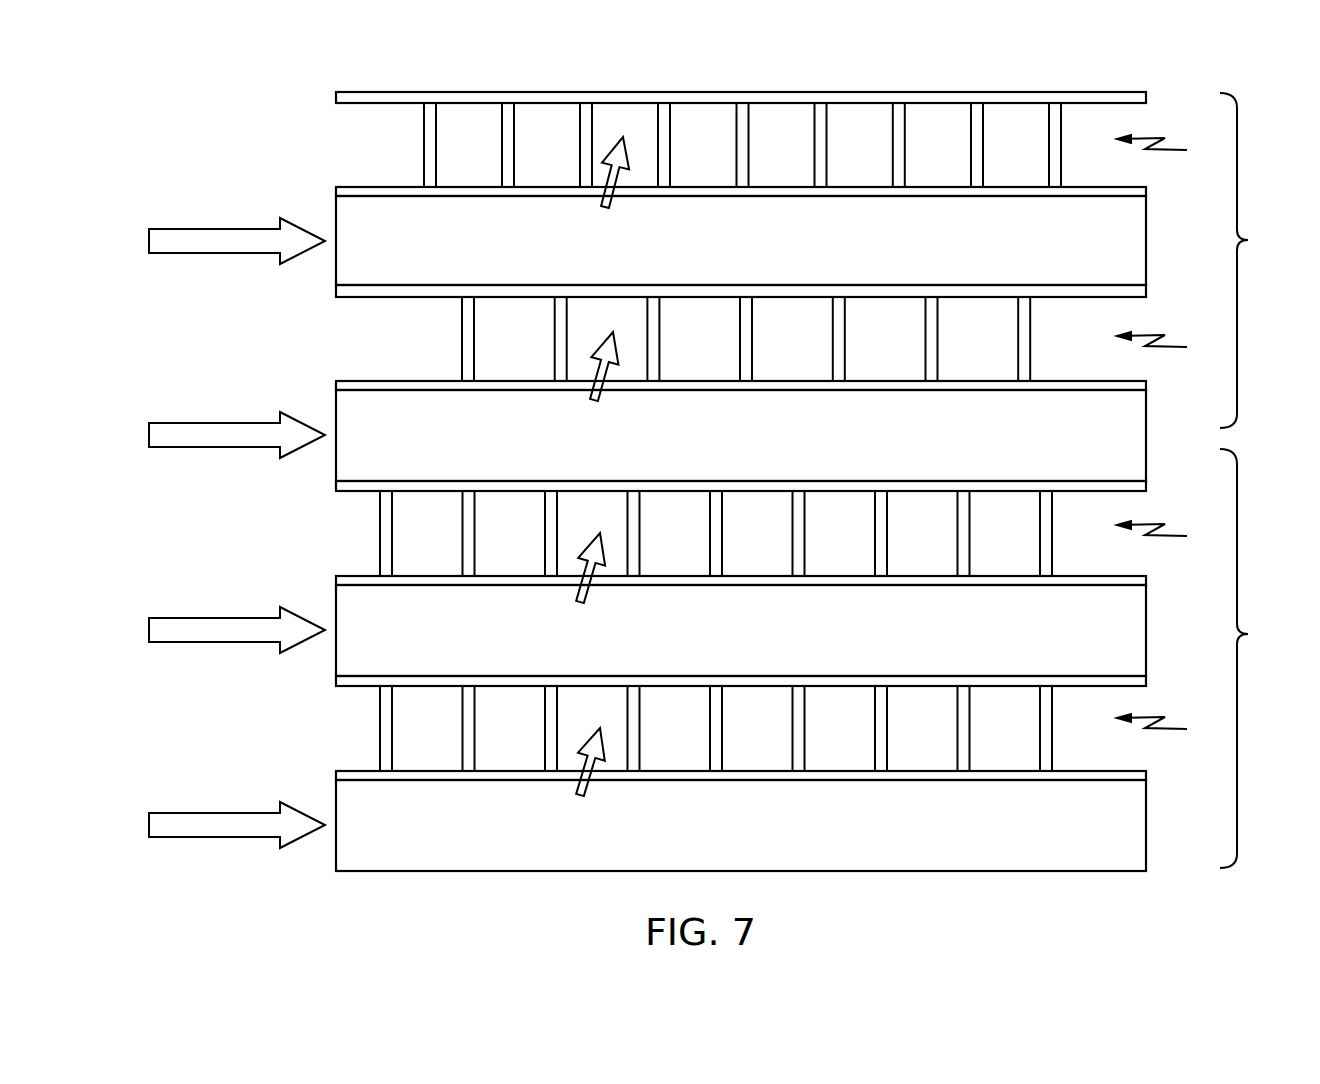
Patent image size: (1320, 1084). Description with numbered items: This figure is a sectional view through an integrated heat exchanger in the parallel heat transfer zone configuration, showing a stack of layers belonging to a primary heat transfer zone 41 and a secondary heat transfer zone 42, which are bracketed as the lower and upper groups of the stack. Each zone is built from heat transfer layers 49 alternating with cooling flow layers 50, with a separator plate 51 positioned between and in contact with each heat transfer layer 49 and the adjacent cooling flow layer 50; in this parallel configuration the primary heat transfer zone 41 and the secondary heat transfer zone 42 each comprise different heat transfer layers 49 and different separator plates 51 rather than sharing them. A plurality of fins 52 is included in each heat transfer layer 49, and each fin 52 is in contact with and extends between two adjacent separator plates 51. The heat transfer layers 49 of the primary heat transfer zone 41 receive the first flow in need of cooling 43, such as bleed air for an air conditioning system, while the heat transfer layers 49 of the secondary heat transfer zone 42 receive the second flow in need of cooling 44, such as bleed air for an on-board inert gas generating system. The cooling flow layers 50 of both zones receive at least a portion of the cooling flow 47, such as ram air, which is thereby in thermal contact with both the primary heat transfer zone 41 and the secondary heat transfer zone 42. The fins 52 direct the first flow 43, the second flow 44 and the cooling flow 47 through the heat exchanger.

The primary heat transfer zone 41 is at (1255, 658).
The secondary heat transfer zone 42 is at (1255, 260).
The first flow in need of cooling 43 is at (583, 603).
The second flow in need of cooling 44 is at (608, 208).
The cooling flow 47 is at (207, 230).
The heat transfer layer 49 is at (1170, 439).
The cooling flow layer 50 is at (1146, 242).
The separator plate 51 is at (336, 98).
The fin 52 is at (827, 150).